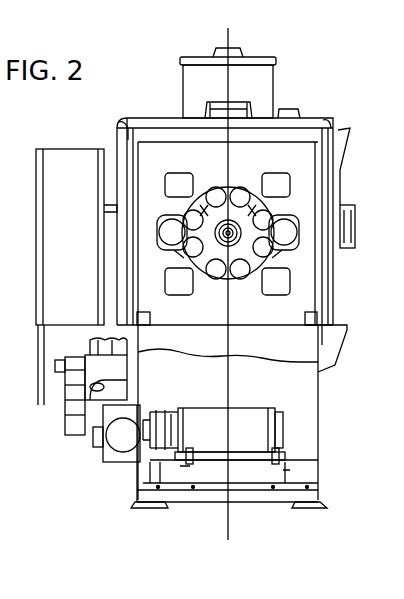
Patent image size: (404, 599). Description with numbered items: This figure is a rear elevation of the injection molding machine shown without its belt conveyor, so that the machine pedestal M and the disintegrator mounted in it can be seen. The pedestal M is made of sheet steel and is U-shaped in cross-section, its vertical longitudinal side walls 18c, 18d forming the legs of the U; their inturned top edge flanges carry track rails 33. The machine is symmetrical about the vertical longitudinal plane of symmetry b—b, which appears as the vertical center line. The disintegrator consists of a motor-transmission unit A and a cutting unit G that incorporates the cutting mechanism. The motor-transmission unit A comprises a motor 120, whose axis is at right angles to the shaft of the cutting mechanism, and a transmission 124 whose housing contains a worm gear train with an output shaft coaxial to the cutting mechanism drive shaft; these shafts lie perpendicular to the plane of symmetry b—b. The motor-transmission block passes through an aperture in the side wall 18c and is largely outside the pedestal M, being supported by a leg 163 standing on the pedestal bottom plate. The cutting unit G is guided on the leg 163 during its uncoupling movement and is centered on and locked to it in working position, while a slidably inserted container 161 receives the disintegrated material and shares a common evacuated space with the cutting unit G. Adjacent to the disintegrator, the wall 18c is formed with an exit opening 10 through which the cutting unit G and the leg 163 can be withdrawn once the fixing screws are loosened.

The machine frame / housing F is at (152, 107).
The plane of symmetry b is at (227, 285).
The track rails 33 is at (150, 318).
The longitudinal side wall 18d is at (160, 350).
The longitudinal side wall 18c is at (318, 372).
The exit opening 10 is at (322, 438).
The cutting unit G is at (228, 406).
The container 161 is at (216, 470).
The leg 163 is at (298, 470).
The machine pedestal M is at (128, 393).
The motor 120 is at (115, 438).
The transmission 124 is at (112, 463).
The motor-transmission unit A is at (101, 464).